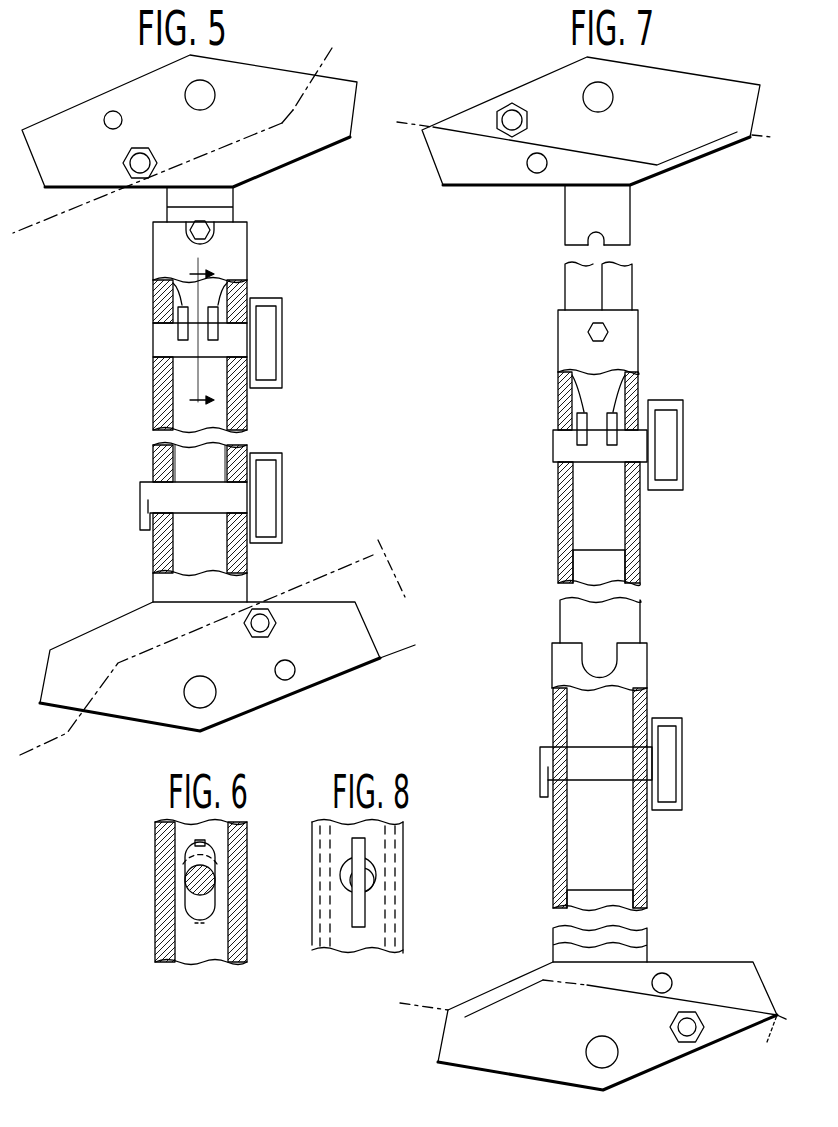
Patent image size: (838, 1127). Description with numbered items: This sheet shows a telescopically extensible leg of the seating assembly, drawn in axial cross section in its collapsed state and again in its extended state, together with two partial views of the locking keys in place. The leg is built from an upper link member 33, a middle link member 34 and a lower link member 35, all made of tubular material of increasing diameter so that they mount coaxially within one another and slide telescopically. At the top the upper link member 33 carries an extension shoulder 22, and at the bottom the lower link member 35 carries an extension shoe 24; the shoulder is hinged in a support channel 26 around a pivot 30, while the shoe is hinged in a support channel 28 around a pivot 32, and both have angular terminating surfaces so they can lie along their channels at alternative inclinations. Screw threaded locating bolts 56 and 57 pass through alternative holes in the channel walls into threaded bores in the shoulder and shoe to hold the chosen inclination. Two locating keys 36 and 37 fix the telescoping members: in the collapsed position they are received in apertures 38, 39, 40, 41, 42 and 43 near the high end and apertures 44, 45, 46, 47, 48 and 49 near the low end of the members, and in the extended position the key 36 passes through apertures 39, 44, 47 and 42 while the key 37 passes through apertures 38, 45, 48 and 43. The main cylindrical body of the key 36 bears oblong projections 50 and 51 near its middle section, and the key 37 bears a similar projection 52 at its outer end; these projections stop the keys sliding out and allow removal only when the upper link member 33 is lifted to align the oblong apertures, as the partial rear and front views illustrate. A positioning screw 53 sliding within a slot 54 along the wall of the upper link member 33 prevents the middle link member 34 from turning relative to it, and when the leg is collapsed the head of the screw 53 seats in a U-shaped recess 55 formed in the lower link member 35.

In FIG. 5, the extension shoulder 22 is at (68, 130).
In FIG. 7, the extension shoulder 22 is at (446, 168).
In FIG. 5, the extension shoe 24 is at (86, 646).
In FIG. 7, the extension shoe 24 is at (735, 963).
In FIG. 5, the support channel 26 is at (303, 113).
In FIG. 7, the support channel 26 is at (727, 140).
In FIG. 5, the support channel 28 is at (212, 634).
In FIG. 7, the support channel 28 is at (595, 1028).
In FIG. 5, the pivot 30 is at (215, 95).
In FIG. 7, the pivot 30 is at (613, 97).
In FIG. 5, the pivot 32 is at (212, 681).
In FIG. 7, the pivot 32 is at (586, 1045).
In FIG. 5, the upper link member 33 is at (222, 192).
In FIG. 6, the upper link member 33 is at (170, 841).
In FIG. 8, the upper link member 33 is at (328, 934).
In FIG. 7, the upper link member 33 is at (632, 213).
In FIG. 5, the middle link member 34 is at (240, 216).
In FIG. 6, the middle link member 34 is at (165, 927).
In FIG. 8, the middle link member 34 is at (396, 925).
In FIG. 7, the middle link member 34 is at (640, 342).
In FIG. 5, the lower link member 35 is at (248, 238).
In FIG. 6, the lower link member 35 is at (247, 835).
In FIG. 8, the lower link member 35 is at (380, 835).
In FIG. 7, the lower link member 35 is at (648, 660).
In FIG. 5, the locating key 36 is at (237, 340).
In FIG. 6, the locating key 36 is at (192, 884).
In FIG. 7, the locating key 36 is at (640, 448).
In FIG. 5, the locating key 37 is at (233, 500).
In FIG. 8, the locating key 37 is at (362, 875).
In FIG. 7, the locating key 37 is at (635, 768).
In FIG. 5, the aperture 38 is at (280, 313).
In FIG. 8, the aperture 38 is at (350, 848).
In FIG. 7, the aperture 38 is at (652, 738).
In FIG. 5, the aperture 39 is at (240, 306).
In FIG. 6, the aperture 39 is at (183, 854).
In FIG. 7, the aperture 39 is at (648, 420).
In FIG. 5, the aperture 40 is at (240, 370).
In FIG. 6, the aperture 40 is at (210, 905).
In FIG. 5, the aperture 41 is at (160, 373).
In FIG. 5, the aperture 42 is at (152, 322).
In FIG. 7, the aperture 42 is at (558, 426).
In FIG. 5, the aperture 43 is at (153, 306).
In FIG. 7, the aperture 43 is at (555, 739).
In FIG. 5, the aperture 44 is at (232, 528).
In FIG. 7, the aperture 44 is at (628, 473).
In FIG. 5, the aperture 45 is at (236, 456).
In FIG. 7, the aperture 45 is at (652, 797).
In FIG. 5, the aperture 46 is at (245, 471).
In FIG. 5, the aperture 47 is at (160, 535).
In FIG. 7, the aperture 47 is at (565, 474).
In FIG. 5, the aperture 48 is at (160, 462).
In FIG. 7, the aperture 48 is at (570, 798).
In FIG. 5, the aperture 49 is at (153, 471).
In FIG. 5, the oblong projection 50 is at (210, 327).
In FIG. 6, the oblong projection 50 is at (215, 868).
In FIG. 7, the oblong projection 50 is at (616, 412).
In FIG. 5, the oblong projection 51 is at (158, 278).
In FIG. 7, the oblong projection 51 is at (578, 412).
In FIG. 5, the projection 52 is at (140, 511).
In FIG. 7, the projection 52 is at (540, 792).
In FIG. 5, the positioning screw 53 is at (194, 226).
In FIG. 7, the positioning screw 53 is at (587, 333).
In FIG. 7, the slot 54 is at (606, 238).
In FIG. 5, the U-shaped recess 55 is at (186, 235).
In FIG. 5, the locating bolt 56 is at (148, 148).
In FIG. 7, the locating bolt 56 is at (499, 106).
In FIG. 5, the locating bolt 57 is at (270, 623).
In FIG. 7, the locating bolt 57 is at (674, 1022).